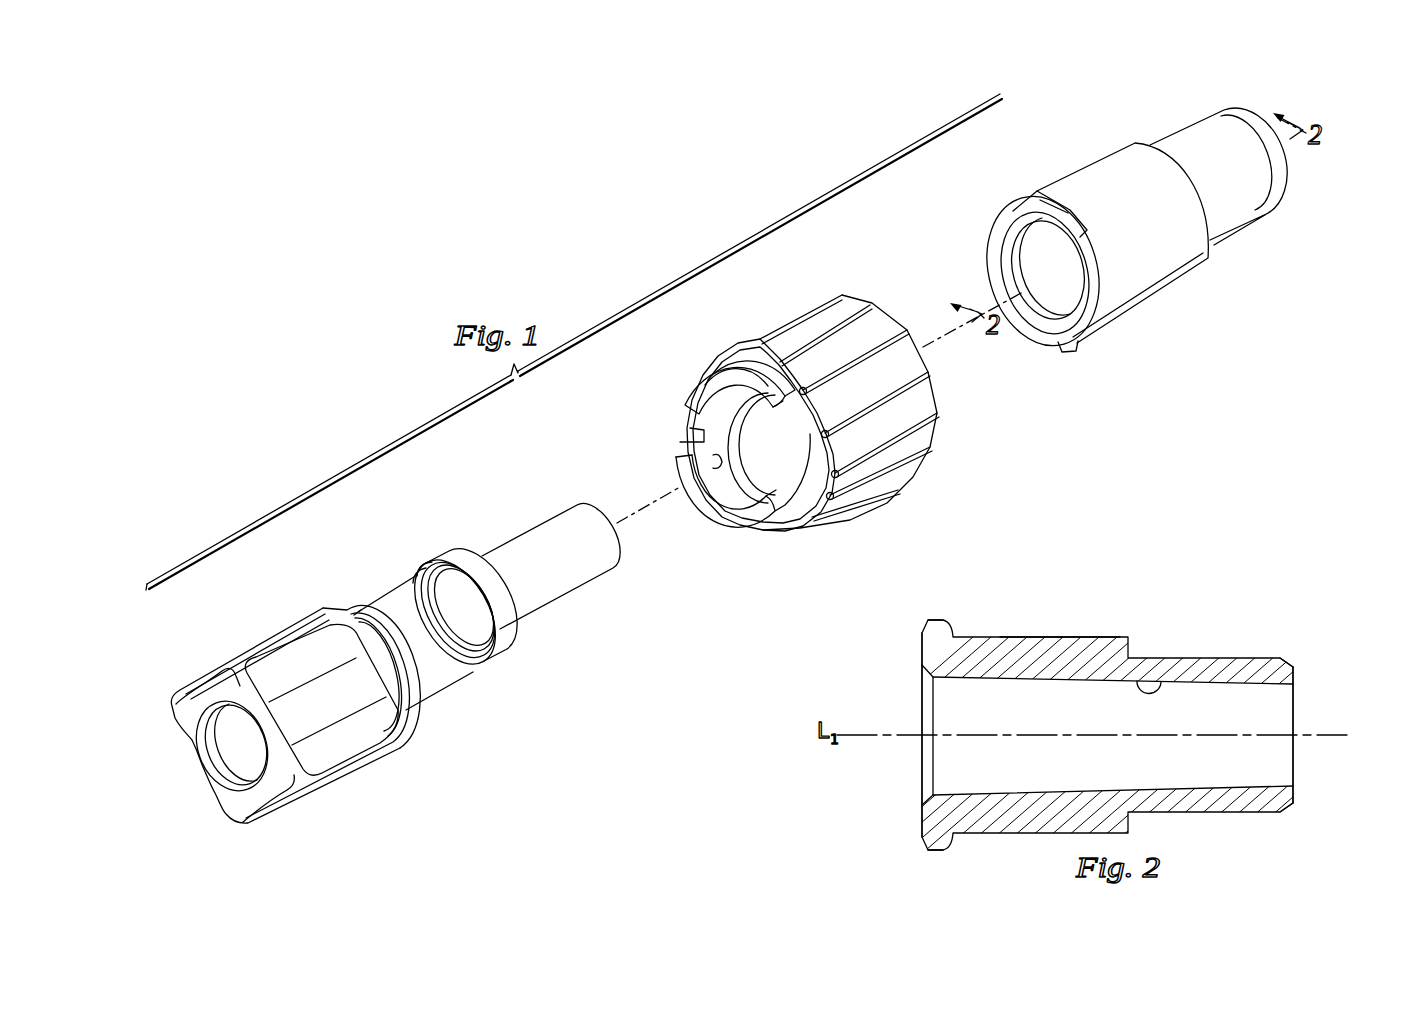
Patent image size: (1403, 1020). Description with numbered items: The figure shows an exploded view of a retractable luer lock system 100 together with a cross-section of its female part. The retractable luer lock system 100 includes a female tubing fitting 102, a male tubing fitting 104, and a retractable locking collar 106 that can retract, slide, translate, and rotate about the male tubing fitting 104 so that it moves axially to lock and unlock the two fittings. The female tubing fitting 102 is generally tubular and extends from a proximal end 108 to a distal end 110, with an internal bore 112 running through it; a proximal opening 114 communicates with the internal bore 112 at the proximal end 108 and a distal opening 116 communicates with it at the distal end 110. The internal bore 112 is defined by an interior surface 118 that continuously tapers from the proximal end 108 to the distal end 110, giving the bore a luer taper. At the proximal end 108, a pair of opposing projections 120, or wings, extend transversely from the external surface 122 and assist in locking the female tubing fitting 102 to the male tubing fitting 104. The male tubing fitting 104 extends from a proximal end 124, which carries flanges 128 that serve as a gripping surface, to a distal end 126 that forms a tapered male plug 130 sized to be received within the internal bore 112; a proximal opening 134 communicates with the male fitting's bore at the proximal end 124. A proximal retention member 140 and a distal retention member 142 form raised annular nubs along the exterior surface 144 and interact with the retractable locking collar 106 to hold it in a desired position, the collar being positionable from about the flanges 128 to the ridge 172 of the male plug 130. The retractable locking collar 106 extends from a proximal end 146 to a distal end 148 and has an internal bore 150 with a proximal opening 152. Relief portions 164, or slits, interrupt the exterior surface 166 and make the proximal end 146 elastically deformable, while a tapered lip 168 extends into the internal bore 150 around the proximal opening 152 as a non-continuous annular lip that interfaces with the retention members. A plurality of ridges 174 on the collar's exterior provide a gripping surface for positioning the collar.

In FIG. 1, the retractable luer lock system 100 is at (496, 436).
In FIG. 1, the female tubing fitting 102 is at (1137, 255).
In FIG. 2, the female tubing fitting 102 is at (1054, 721).
In FIG. 1, the male tubing fitting 104 is at (467, 616).
In FIG. 1, the retractable locking collar 106 is at (770, 402).
In FIG. 1, the proximal end 108 is at (1011, 271).
In FIG. 2, the proximal end 108 is at (870, 735).
In FIG. 1, the distal end 110 is at (1301, 178).
In FIG. 2, the distal end 110 is at (1335, 735).
In FIG. 1, the internal bore 112 is at (1014, 269).
In FIG. 2, the internal bore 112 is at (1091, 748).
In FIG. 1, the proximal opening 114 is at (1057, 307).
In FIG. 2, the proximal opening 114 is at (928, 715).
In FIG. 2, the distal opening 116 is at (1293, 722).
In FIG. 2, the interior surface 118 is at (1151, 680).
In FIG. 1, the projections 120 is at (1060, 190).
In FIG. 2, the projections 120 is at (948, 622).
In FIG. 1, the external surface 122 is at (1107, 168).
In FIG. 2, the external surface 122 is at (1097, 637).
In FIG. 1, the proximal end 124 is at (282, 719).
In FIG. 1, the distal end 126 is at (502, 616).
In FIG. 1, the flanges 128 is at (278, 636).
In FIG. 1, the male plug 130 is at (551, 554).
In FIG. 1, the proximal opening 134 is at (212, 746).
In FIG. 1, the proximal retention member 140 is at (358, 612).
In FIG. 1, the distal retention member 142 is at (427, 568).
In FIG. 1, the exterior surface 144 is at (397, 602).
In FIG. 1, the proximal end 146 is at (733, 442).
In FIG. 1, the distal end 148 is at (859, 375).
In FIG. 1, the internal bore 150 is at (720, 508).
In FIG. 1, the proximal opening 152 is at (718, 460).
In FIG. 1, the relief portions 164 is at (772, 410).
In FIG. 1, the exterior surface 166 is at (725, 383).
In FIG. 1, the tapered lip 168 is at (702, 453).
In FIG. 1, the ridge 172 is at (508, 607).
In FIG. 1, the ridges 174 is at (818, 326).